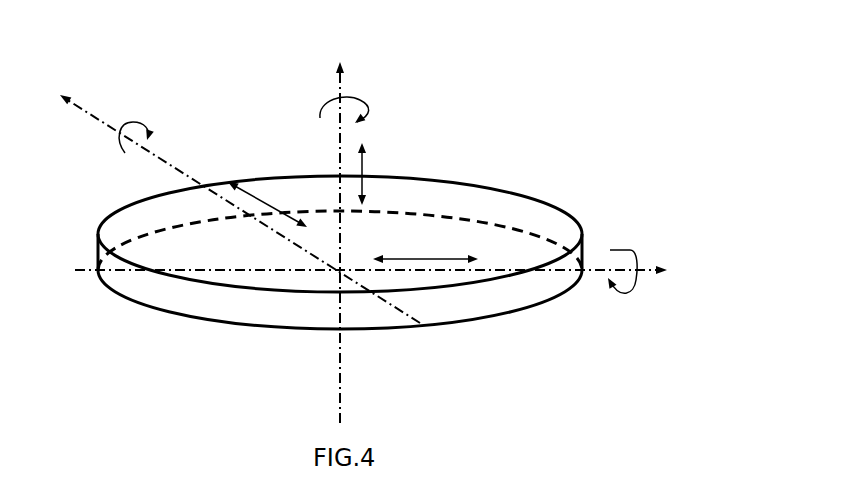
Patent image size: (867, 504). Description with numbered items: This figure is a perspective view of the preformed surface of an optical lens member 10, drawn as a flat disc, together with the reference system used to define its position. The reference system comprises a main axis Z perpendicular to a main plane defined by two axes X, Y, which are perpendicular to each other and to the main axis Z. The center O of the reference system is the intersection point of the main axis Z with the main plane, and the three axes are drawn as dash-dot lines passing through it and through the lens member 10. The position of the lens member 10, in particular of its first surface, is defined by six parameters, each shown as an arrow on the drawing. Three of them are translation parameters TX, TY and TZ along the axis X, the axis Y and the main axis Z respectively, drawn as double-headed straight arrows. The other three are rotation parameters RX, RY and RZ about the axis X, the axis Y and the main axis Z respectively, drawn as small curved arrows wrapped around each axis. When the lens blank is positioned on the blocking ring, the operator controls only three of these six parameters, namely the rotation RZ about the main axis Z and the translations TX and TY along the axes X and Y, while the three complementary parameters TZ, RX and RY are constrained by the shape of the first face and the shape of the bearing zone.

The lens member 10 is at (518, 205).
The axis X is at (378, 258).
The axis Y is at (240, 193).
The main axis Z is at (324, 236).
The center of the reference system O is at (348, 245).
The translation parameter along axis X TX is at (425, 242).
The translation parameter along axis Y TY is at (267, 185).
The translation parameter along main axis Z TZ is at (377, 173).
The rotation parameter about axis X RX is at (622, 291).
The rotation parameter about axis Y RY is at (115, 149).
The rotation parameter about main axis Z RZ is at (359, 101).